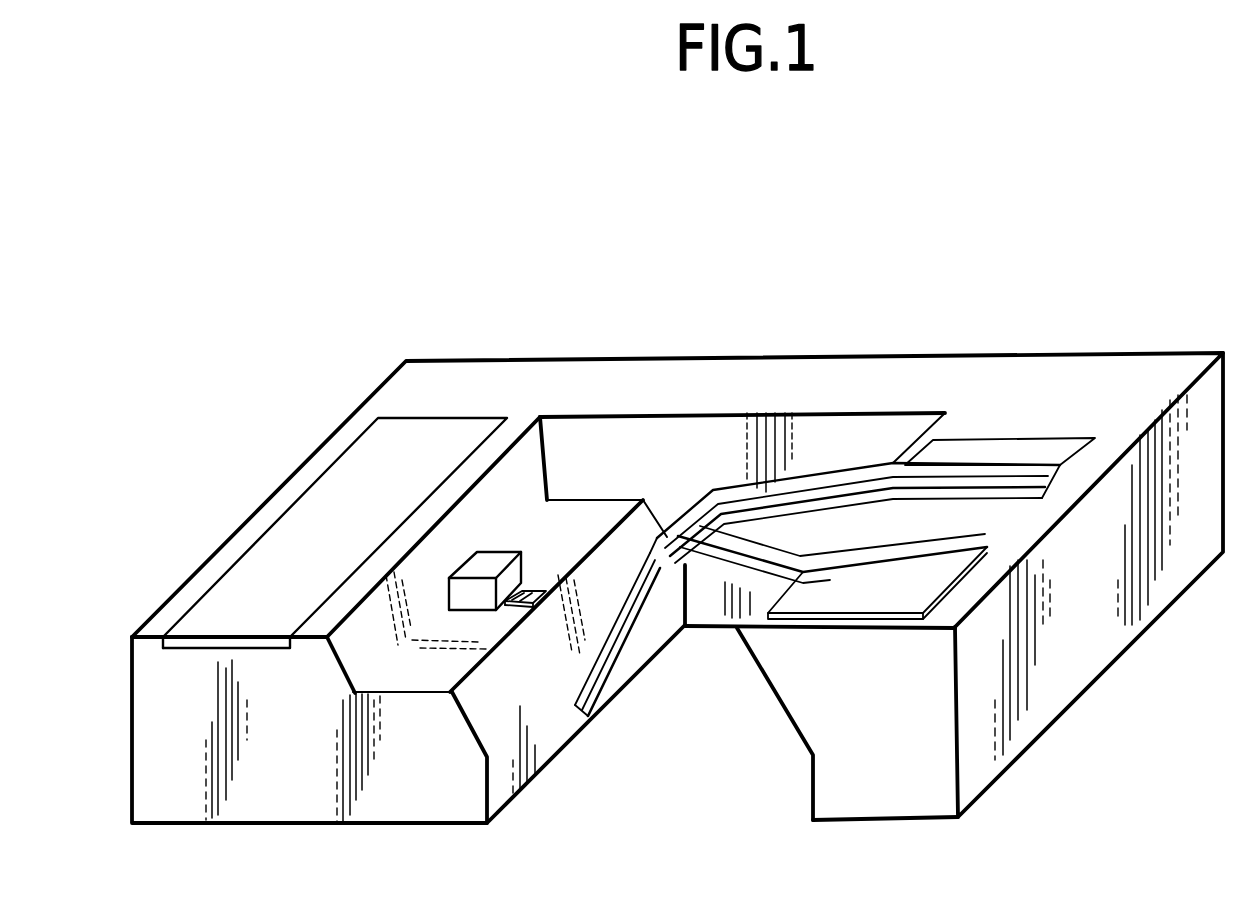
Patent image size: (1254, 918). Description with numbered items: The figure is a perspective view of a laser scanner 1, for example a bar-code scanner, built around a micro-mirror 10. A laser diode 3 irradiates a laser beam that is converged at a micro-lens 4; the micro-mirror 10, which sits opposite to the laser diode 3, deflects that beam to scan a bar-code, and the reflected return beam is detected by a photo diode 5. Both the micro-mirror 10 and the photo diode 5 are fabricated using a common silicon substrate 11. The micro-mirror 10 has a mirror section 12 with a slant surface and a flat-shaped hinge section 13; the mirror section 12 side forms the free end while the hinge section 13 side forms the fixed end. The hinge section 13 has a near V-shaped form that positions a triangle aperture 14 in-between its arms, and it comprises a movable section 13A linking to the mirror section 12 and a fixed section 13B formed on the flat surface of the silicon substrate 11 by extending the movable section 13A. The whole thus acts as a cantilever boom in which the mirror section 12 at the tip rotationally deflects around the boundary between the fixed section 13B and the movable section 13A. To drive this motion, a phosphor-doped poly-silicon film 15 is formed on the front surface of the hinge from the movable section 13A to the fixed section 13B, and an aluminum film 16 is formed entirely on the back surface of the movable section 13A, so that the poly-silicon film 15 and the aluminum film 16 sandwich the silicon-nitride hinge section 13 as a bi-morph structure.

The laser scanner 1 is at (1002, 296).
The laser diode 3 is at (487, 572).
The micro-lens 4 is at (525, 598).
The photo diode 5 is at (333, 490).
The micro-mirror 10 is at (823, 462).
The silicon substrate 11 is at (1085, 375).
The mirror section 12 is at (575, 681).
The hinge section 13 is at (778, 727).
The movable section 13A is at (720, 558).
The fixed section 13B is at (798, 557).
The triangle aperture 14 is at (812, 531).
The poly-silicon film 15 is at (843, 600).
The aluminum film 16 is at (644, 650).